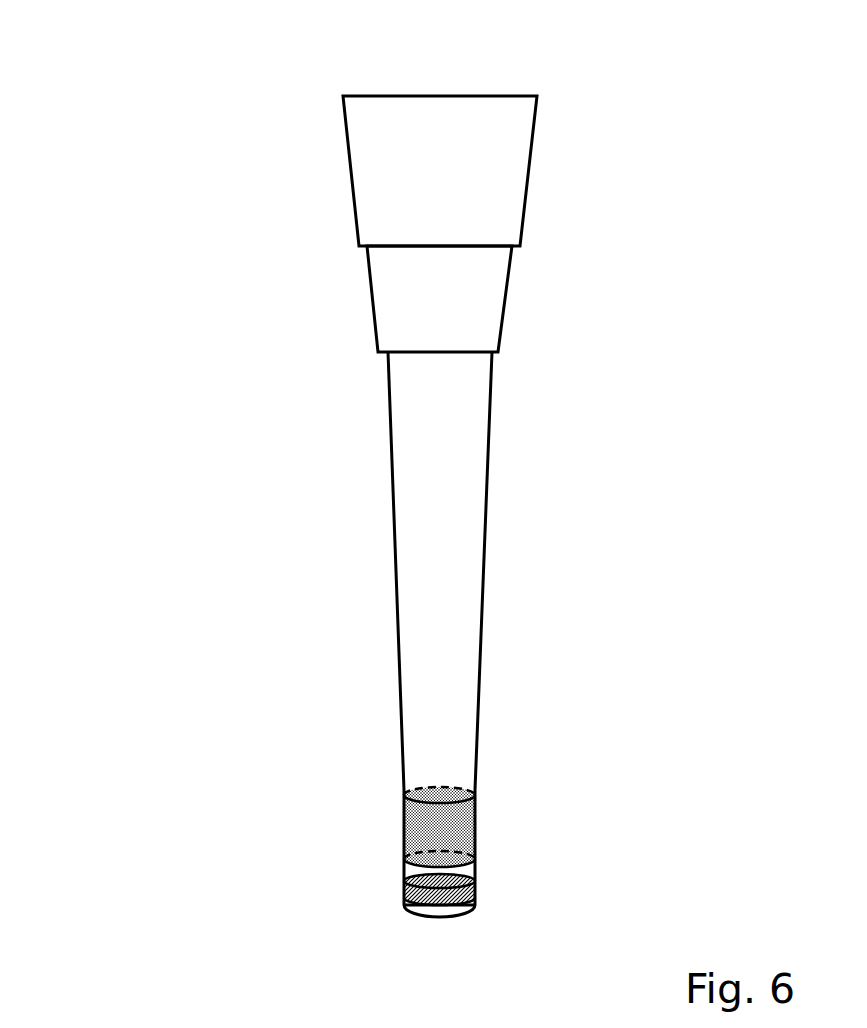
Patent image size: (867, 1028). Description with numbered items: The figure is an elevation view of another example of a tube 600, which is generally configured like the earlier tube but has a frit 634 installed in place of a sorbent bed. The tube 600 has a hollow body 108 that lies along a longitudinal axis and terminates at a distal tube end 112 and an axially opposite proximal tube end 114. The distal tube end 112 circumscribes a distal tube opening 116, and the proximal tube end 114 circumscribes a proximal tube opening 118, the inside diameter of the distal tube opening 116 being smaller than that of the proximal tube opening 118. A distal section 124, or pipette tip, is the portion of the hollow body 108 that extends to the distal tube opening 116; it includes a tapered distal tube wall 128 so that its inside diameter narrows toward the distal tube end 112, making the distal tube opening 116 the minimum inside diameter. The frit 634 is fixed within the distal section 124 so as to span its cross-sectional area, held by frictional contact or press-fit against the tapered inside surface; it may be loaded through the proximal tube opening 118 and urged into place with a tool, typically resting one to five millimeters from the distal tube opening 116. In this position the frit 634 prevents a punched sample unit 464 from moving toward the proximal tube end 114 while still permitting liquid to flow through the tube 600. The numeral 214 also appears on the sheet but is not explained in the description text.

The tube 600 is at (165, 213).
The proximal tube end 114 is at (522, 78).
The proximal tube opening 118 is at (357, 97).
The hollow body 108 is at (392, 525).
The distal section 124 is at (367, 822).
The frit 634 is at (478, 823).
The tapered distal tube wall 128 is at (403, 882).
The punched sample unit 464 is at (473, 892).
The distal tube opening 116 is at (413, 915).
The distal tube end 112 is at (452, 925).
The cut-off numeral 214 is at (554, 1023).